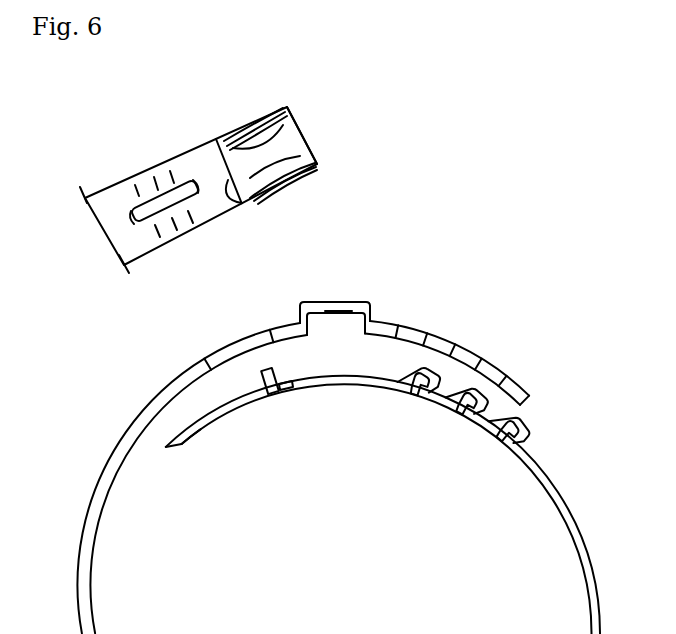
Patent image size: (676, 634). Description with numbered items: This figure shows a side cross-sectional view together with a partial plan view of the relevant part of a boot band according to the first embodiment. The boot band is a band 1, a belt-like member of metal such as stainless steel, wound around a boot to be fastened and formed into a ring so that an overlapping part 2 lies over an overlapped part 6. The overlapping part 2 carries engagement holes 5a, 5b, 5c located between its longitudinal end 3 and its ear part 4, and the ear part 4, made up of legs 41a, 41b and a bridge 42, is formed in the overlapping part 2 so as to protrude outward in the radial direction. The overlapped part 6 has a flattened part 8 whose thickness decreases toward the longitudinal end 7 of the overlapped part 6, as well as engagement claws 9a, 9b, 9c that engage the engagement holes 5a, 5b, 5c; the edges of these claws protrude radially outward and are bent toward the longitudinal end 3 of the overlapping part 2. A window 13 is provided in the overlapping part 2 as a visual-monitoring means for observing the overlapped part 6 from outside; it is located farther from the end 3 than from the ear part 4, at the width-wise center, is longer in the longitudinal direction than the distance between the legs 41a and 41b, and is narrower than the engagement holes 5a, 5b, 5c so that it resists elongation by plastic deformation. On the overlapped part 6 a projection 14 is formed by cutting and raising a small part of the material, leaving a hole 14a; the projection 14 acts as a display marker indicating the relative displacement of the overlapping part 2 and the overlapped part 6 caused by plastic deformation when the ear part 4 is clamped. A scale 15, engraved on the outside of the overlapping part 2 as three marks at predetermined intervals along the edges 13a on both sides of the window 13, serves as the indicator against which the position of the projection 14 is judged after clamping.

The band 1 is at (434, 249).
The overlapping part 2 is at (198, 160).
The longitudinal end 3 is at (531, 388).
The ear part 4 is at (274, 101).
The engagement hole 5a is at (420, 331).
The engagement hole 5b is at (466, 349).
The engagement hole 5c is at (518, 379).
The overlapped part 6 is at (330, 385).
The longitudinal end 7 is at (166, 448).
The flattened part 8 is at (200, 425).
The engagement claw 9a is at (430, 393).
The engagement claw 9b is at (477, 410).
The engagement claw 9c is at (523, 437).
The window 13 is at (165, 199).
The edge 13a is at (134, 204).
The projection 14 is at (267, 383).
The hole 14a is at (285, 390).
The scale 15 is at (137, 184).
The leg 41a is at (302, 133).
The leg 41b is at (245, 200).
The bridge 42 is at (250, 140).